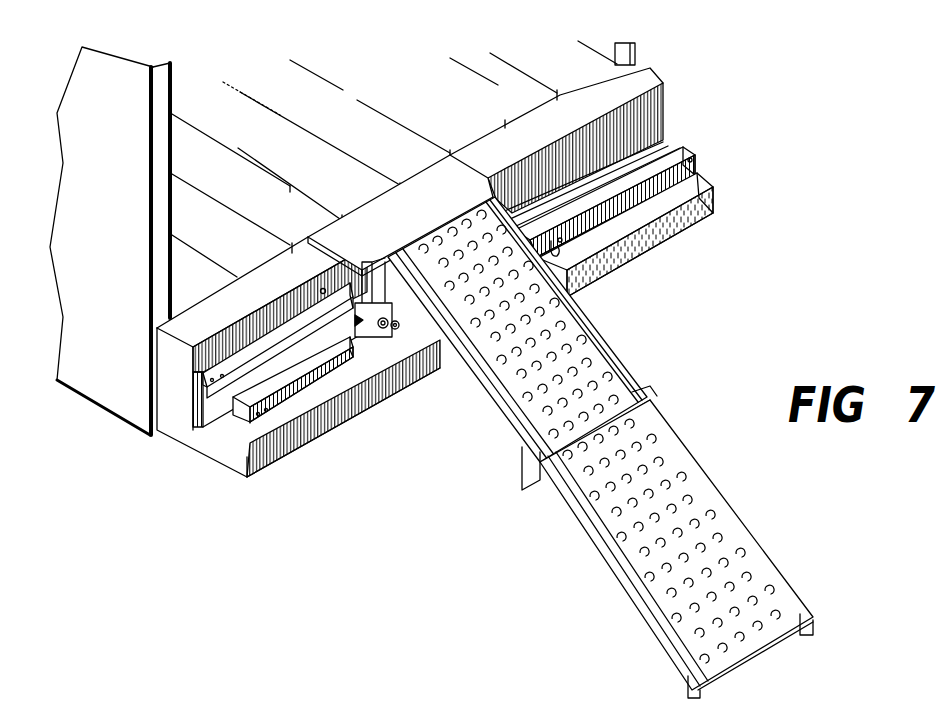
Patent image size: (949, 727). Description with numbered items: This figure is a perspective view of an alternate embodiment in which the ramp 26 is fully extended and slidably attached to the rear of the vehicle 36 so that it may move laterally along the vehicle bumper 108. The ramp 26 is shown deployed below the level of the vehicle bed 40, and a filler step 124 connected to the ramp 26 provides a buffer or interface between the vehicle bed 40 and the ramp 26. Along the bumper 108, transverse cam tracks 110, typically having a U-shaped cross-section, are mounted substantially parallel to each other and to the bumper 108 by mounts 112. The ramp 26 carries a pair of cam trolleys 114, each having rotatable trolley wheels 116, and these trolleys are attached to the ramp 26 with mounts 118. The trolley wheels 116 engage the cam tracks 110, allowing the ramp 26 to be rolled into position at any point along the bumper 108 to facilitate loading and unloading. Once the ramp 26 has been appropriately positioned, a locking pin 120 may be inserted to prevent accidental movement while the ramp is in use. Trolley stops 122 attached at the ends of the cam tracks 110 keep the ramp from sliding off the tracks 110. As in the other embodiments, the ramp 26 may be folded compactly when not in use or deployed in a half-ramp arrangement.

The ramp 26 is at (655, 634).
The vehicle 36 is at (105, 223).
The vehicle bed 40 is at (298, 158).
The vehicle bumper 108 is at (713, 197).
The cam tracks 110 is at (240, 408).
The mounts 112 is at (187, 390).
The cam trolleys 114 is at (398, 324).
The trolley wheels 116 is at (388, 338).
The mounts 118 is at (362, 263).
The locking pin 120 is at (562, 255).
The trolley stops 122 is at (257, 412).
The filler step 124 is at (437, 209).